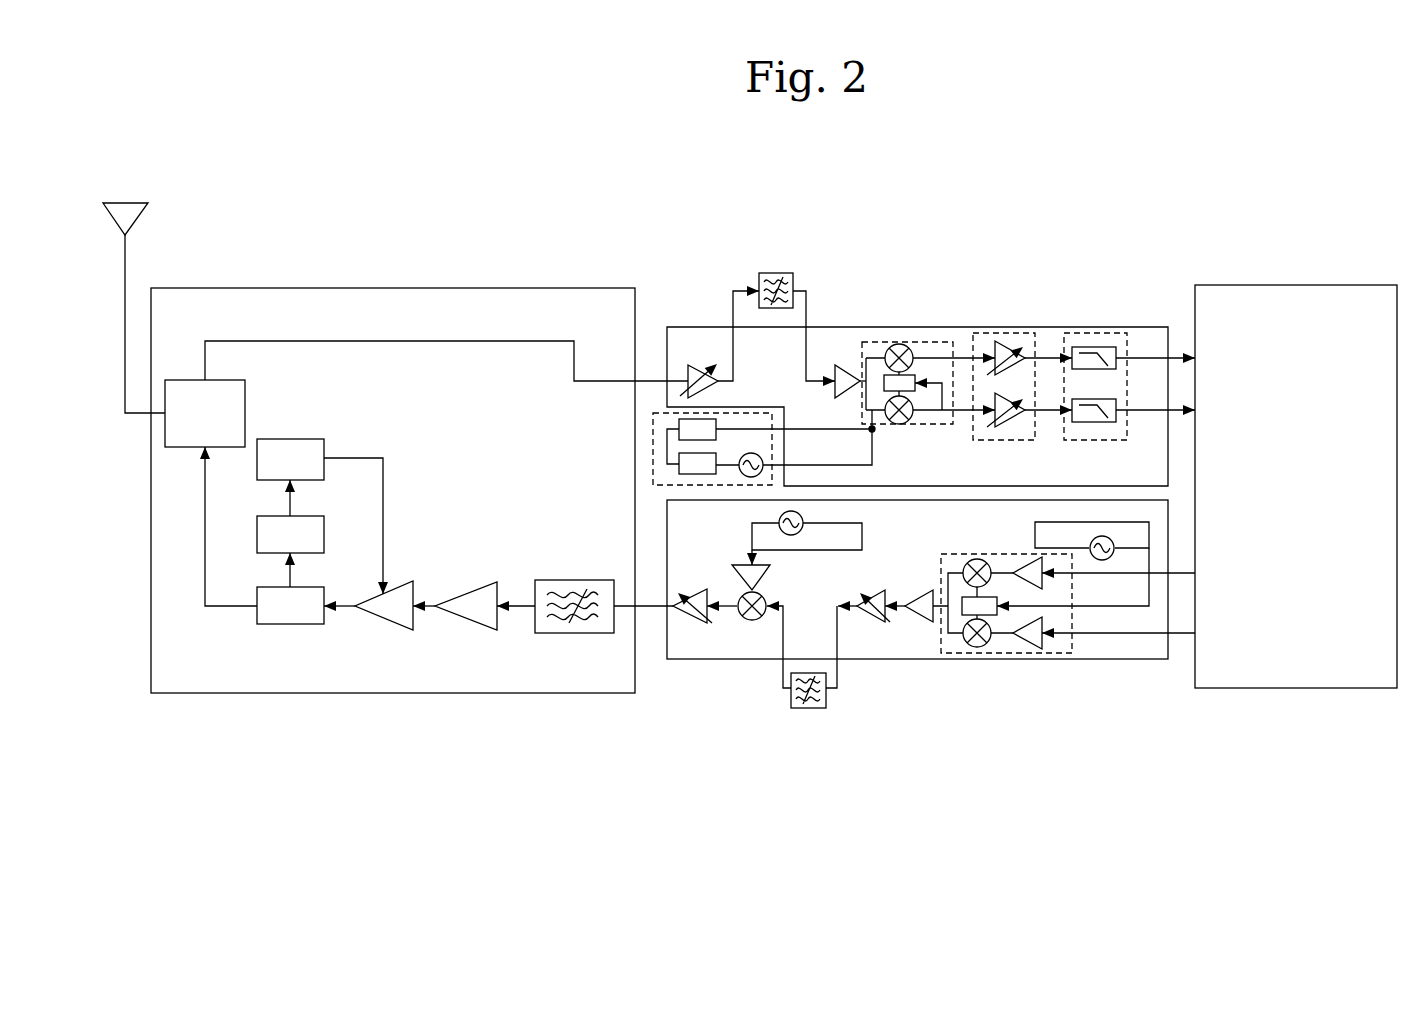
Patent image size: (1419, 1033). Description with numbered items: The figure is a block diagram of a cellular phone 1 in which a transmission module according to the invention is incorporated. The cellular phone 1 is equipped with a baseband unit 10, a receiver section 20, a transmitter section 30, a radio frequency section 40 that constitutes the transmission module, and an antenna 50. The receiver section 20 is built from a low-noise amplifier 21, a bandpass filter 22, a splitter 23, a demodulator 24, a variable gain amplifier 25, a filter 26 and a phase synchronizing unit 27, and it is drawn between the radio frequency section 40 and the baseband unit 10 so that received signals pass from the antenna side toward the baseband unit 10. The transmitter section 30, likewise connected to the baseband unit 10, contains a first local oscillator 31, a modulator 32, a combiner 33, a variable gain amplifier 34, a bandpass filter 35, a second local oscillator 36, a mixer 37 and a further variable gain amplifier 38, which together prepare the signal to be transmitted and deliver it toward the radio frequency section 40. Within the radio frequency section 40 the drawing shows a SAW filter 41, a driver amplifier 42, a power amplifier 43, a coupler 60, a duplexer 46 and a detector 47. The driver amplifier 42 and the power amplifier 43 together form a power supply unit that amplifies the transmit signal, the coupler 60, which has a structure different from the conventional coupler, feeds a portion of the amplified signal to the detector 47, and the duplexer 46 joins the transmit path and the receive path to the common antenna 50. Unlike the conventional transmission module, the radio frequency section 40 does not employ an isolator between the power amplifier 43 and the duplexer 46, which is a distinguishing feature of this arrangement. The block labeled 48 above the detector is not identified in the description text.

The cellular phone 1 is at (805, 179).
The baseband unit 10 is at (1290, 285).
The receiver section 20 is at (940, 327).
The low-noise amplifier 21 is at (693, 372).
The bandpass filter 22 is at (775, 273).
The splitter 23 is at (840, 372).
The demodulator 24 is at (878, 342).
The variable gain amplifier 25 is at (1005, 333).
The filter 26 is at (1090, 333).
The phase synchronizing unit 27 is at (665, 412).
The transmitter section 30 is at (1087, 659).
The first local oscillator 31 is at (1090, 543).
The modulator 32 is at (982, 653).
The combiner 33 is at (915, 620).
The variable gain amplifier 34 is at (872, 620).
The bandpass filter 35 is at (810, 708).
The second local oscillator 36 is at (807, 526).
The mixer 37 is at (750, 621).
The variable gain amplifier 38 is at (693, 620).
The radio frequency section 40 is at (407, 288).
The SAW filter 41 is at (565, 580).
The driver amplifier 42 is at (470, 590).
The power amplifier 43 is at (398, 596).
The duplexer 46 is at (245, 392).
The detector 47 is at (324, 525).
The control unit 48 is at (300, 439).
The antenna 50 is at (133, 203).
The coupler 60 is at (290, 624).